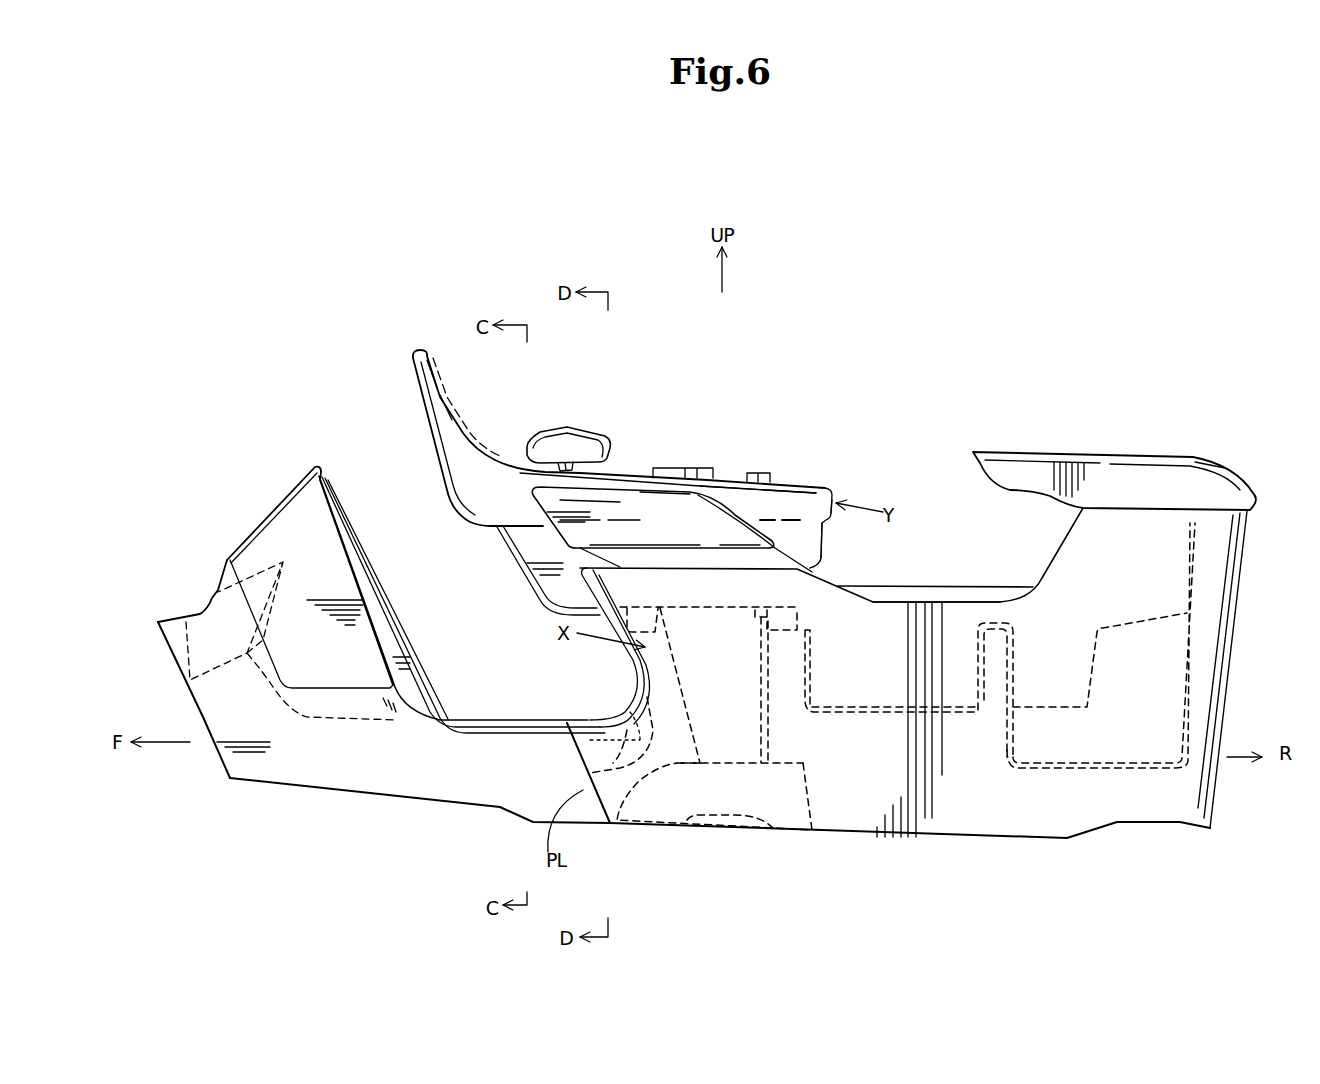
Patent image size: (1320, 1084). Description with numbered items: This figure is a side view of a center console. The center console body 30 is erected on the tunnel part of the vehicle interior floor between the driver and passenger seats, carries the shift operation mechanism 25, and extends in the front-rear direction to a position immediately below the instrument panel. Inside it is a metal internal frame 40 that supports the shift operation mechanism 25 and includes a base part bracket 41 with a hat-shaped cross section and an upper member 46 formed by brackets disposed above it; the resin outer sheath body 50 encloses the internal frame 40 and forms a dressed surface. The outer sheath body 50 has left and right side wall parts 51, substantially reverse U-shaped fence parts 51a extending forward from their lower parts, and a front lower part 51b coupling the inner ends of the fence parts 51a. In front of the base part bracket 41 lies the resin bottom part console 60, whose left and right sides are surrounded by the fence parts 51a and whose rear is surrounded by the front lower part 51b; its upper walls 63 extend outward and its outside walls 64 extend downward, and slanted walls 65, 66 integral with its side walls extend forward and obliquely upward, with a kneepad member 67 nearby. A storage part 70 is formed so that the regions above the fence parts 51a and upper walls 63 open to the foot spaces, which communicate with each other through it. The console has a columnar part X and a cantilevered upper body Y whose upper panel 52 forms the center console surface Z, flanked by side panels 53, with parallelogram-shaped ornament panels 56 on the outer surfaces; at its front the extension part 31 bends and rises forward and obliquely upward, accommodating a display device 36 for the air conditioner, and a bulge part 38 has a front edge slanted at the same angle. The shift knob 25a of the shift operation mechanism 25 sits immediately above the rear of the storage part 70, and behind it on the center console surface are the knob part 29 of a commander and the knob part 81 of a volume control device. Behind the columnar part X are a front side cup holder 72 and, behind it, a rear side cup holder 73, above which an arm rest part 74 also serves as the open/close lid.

The shift operation mechanism 25 is at (543, 421).
The shift knob 25a is at (580, 445).
The knob part 29 is at (682, 467).
The center console body 30 is at (692, 341).
The extension part 31 is at (442, 473).
The display device 36 is at (435, 402).
The bulge part 38 is at (518, 577).
The internal frame 40 is at (791, 742).
The base part bracket 41 is at (813, 810).
The upper member 46 is at (785, 670).
The outer sheath body 50 is at (905, 595).
The side wall part 51 is at (709, 690).
The fence part 51a is at (595, 750).
The front lower part 51b is at (607, 708).
The upper panel 52 is at (722, 480).
The side panel 53 is at (810, 540).
The ornament panel 56 is at (645, 525).
The bottom part console 60 is at (360, 794).
The upper wall 63 is at (468, 720).
The outside wall 64 is at (427, 770).
The slanted wall 65 is at (363, 553).
The slanted wall 66 is at (277, 658).
The kneepad member 67 is at (278, 545).
The storage part 70 is at (521, 696).
The front side cup holder 72 is at (968, 714).
The rear side cup holder 73 is at (1058, 764).
The arm rest part 74 is at (1117, 483).
The knob part 81 is at (762, 472).